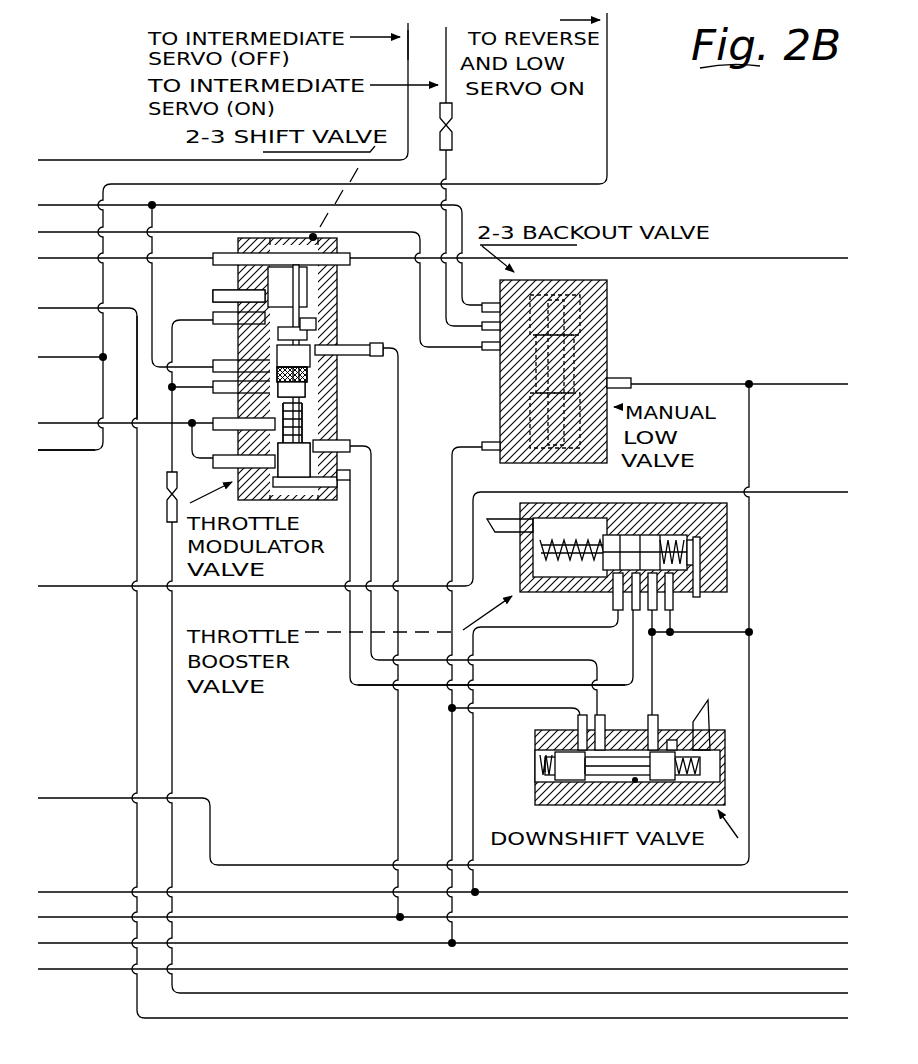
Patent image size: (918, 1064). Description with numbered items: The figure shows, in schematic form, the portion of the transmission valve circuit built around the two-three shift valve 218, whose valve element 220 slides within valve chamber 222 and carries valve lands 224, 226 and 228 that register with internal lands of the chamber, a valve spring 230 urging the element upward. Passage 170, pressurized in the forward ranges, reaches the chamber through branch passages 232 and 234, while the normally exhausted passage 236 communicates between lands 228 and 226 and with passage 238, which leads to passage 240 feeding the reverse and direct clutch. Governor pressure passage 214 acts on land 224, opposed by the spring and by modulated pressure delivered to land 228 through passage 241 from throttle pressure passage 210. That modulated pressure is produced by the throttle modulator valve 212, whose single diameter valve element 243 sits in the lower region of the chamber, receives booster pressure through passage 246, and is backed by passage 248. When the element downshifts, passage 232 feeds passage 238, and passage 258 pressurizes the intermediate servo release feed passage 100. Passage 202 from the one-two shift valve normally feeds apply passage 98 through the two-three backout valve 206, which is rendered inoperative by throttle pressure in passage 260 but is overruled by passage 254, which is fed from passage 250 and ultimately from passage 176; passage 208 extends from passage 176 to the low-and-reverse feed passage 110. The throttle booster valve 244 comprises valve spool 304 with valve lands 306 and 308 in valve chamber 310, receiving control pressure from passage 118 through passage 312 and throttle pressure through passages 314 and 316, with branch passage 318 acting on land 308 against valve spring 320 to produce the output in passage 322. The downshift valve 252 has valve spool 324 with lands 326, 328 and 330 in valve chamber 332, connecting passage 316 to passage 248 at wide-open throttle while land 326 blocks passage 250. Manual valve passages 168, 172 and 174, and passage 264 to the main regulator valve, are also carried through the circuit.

The feed passage 98 is at (452, 158).
The feed passage 100 is at (408, 49).
The feed passage 110 is at (608, 80).
The control pressure passage 118 is at (95, 886).
The passage 168 is at (93, 303).
The passage 170 is at (842, 989).
The passage 172 is at (95, 965).
The passage 174 is at (95, 913).
The passage 176 is at (95, 938).
The passage 202 is at (93, 231).
The 2-3 backout valve 206 is at (617, 304).
The passage 208 is at (93, 448).
The throttle pressure passage 210 is at (93, 417).
The throttle modulator valve 212 is at (333, 471).
The governor pressure passage 214 is at (93, 258).
The 2-3 shift valve 218 is at (312, 322).
The valve element 220 is at (228, 356).
The valve chamber 222 is at (305, 385).
The valve land 224 is at (280, 278).
The valve land 226 is at (228, 337).
The valve land 228 is at (305, 366).
The valve spring 230 is at (303, 407).
The branch passage 232 is at (181, 389).
The branch passage 234 is at (195, 305).
The passage 236 is at (398, 400).
The passage 238 is at (140, 292).
The passage 240 is at (93, 198).
The passage 241 is at (200, 432).
The valve element 243 is at (330, 448).
The throttle booster valve 244 is at (655, 547).
The passage 246 is at (350, 684).
The passage 248 is at (373, 517).
The passage 250 is at (535, 705).
The downshift valve 252 is at (635, 782).
The passage 254 is at (452, 797).
The passage 258 is at (95, 153).
The passage 260 is at (93, 786).
The passage 264 is at (93, 583).
The valve spool 304 is at (617, 595).
The valve land 306 is at (648, 537).
The valve land 308 is at (712, 557).
The valve chamber 310 is at (603, 538).
The passage 312 is at (481, 642).
The passage 314 is at (700, 643).
The passage 316 is at (652, 623).
The branch passage 318 is at (673, 621).
The valve spring 320 is at (533, 545).
The throttle booster valve output pressure passage 322 is at (573, 682).
The valve spool 324 is at (618, 773).
The valve land 326 is at (565, 752).
The valve land 328 is at (665, 730).
The valve land 330 is at (685, 728).
The valve chamber 332 is at (608, 738).